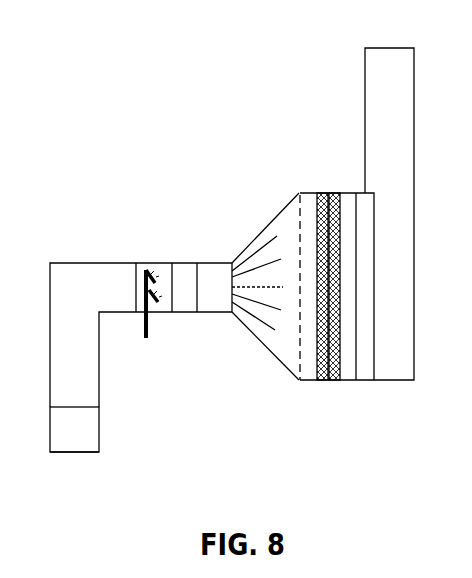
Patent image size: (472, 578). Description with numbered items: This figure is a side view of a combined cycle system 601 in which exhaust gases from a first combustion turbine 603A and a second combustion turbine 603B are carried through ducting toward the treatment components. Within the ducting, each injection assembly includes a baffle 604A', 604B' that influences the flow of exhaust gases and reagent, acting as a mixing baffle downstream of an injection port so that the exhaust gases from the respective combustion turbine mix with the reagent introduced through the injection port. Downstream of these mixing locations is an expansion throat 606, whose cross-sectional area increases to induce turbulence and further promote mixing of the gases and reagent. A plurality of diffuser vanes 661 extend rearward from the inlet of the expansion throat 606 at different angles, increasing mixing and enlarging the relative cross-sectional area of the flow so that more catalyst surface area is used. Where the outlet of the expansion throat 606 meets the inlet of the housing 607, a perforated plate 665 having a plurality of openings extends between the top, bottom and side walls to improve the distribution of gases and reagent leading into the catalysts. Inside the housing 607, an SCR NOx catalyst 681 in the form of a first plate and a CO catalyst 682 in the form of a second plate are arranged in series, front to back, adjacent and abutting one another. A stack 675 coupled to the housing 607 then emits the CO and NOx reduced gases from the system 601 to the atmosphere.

The combined cycle system 601 is at (110, 76).
The first combustion turbine 603A is at (93, 430).
The second combustion turbine 603B is at (93, 448).
The baffle 604A' is at (182, 337).
The baffle 604B' is at (208, 347).
The expansion throat 606 is at (244, 247).
The diffuser vanes 661 is at (263, 260).
The perforated plate 665 is at (297, 192).
The stack 675 is at (363, 95).
The SCR NOx catalyst 681 is at (321, 192).
The CO catalyst 682 is at (331, 192).
The housing 607 is at (348, 381).